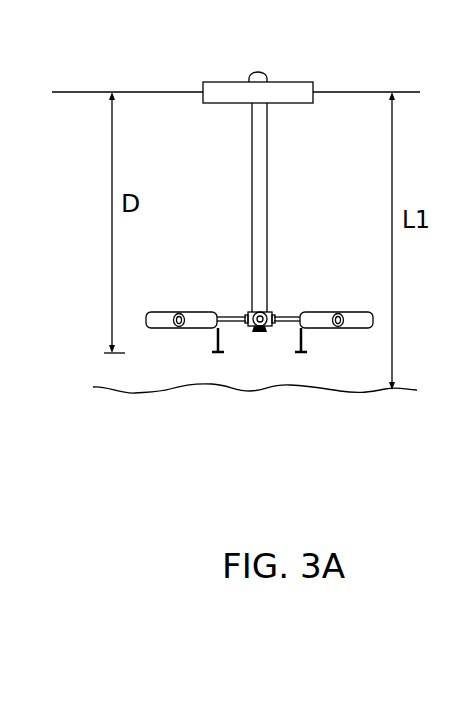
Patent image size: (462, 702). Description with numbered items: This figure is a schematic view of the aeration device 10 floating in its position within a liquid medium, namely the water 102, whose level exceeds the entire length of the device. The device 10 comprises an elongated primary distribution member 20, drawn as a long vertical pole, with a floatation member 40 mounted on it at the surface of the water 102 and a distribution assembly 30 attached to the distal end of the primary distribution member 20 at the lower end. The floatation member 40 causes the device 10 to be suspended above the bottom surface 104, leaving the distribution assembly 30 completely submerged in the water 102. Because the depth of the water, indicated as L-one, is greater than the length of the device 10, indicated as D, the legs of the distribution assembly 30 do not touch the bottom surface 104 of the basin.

The aeration device 10 is at (192, 55).
The floatation member 40 is at (290, 80).
The primary distribution member 20 is at (278, 230).
The distribution assembly 30 is at (281, 299).
The water 102 is at (148, 118).
The bottom surface 104 is at (270, 387).